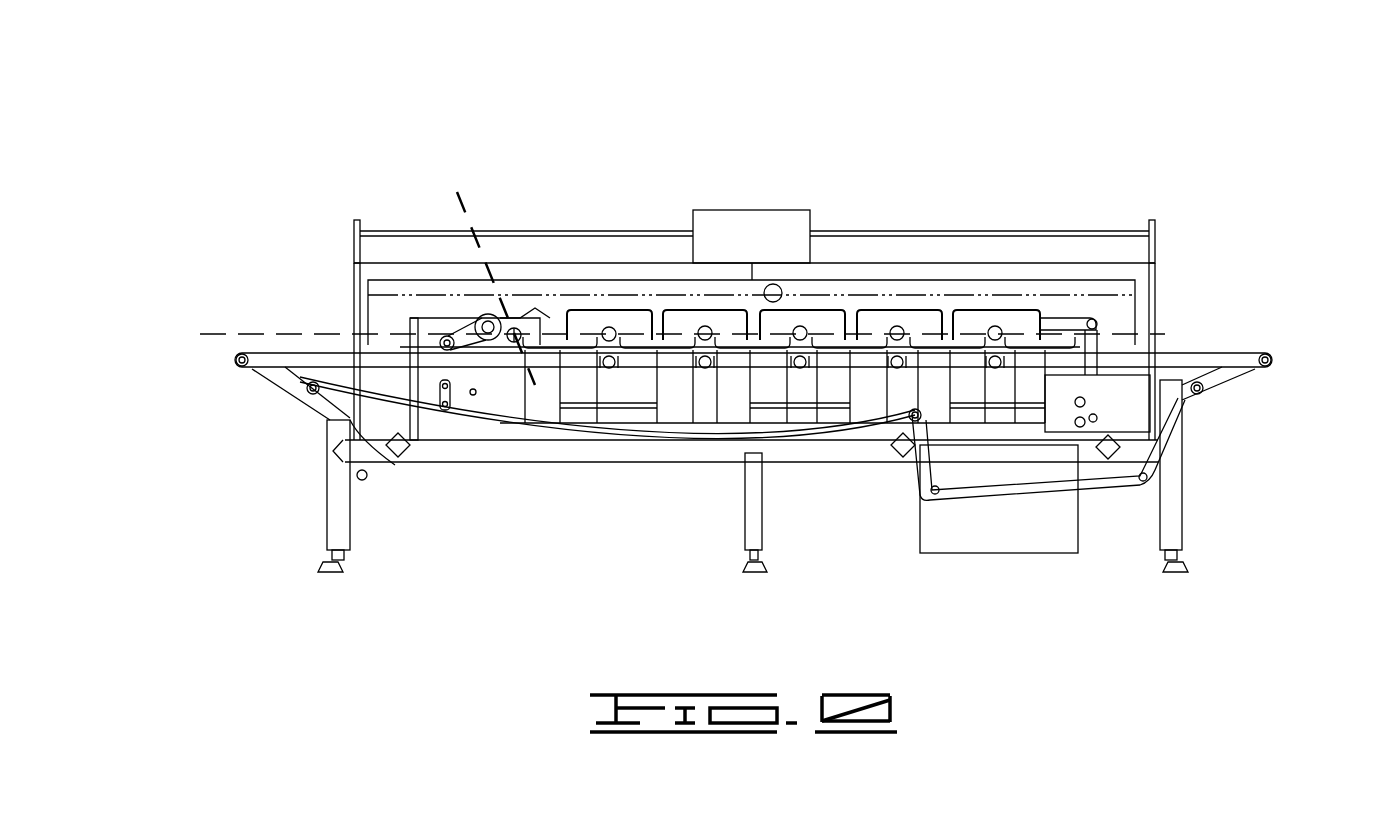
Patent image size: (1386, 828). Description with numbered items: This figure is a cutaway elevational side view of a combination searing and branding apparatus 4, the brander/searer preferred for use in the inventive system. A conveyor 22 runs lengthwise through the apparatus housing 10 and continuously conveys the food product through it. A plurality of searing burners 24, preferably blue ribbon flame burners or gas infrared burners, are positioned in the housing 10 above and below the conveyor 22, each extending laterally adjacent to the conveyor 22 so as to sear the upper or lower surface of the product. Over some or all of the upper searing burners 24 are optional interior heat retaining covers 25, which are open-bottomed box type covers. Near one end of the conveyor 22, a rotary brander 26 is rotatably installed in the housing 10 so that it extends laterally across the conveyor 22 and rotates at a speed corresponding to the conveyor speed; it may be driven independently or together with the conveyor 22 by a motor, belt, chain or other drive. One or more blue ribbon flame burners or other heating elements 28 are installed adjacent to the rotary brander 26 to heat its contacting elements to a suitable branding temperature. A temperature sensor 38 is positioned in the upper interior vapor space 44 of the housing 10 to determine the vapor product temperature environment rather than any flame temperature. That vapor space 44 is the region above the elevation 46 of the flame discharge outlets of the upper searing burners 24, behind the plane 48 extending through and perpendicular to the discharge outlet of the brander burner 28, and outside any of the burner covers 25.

The combination searing and branding apparatus 4 is at (975, 85).
The apparatus housing 10 is at (1080, 232).
The conveyor 22 is at (1265, 350).
The searing burners 24 is at (609, 330).
The interior heat retaining covers 25 is at (623, 310).
The rotary brander 26 is at (487, 317).
The heating elements 28 is at (536, 345).
The temperature sensors 38 is at (774, 283).
The upper interior vapor space 44 is at (1087, 287).
The elevation 46 is at (200, 333).
The plane 48 is at (466, 196).